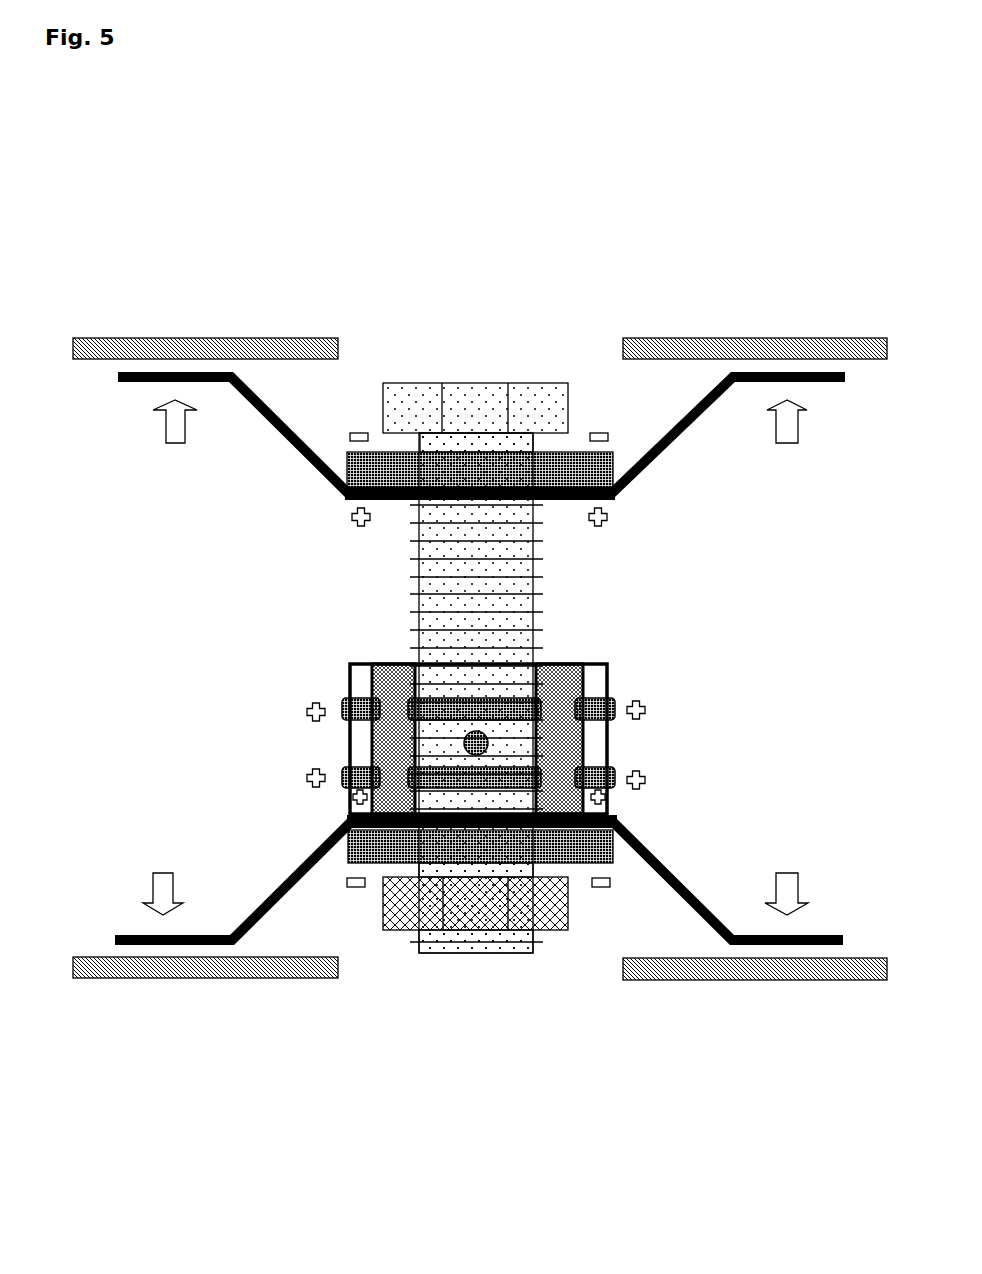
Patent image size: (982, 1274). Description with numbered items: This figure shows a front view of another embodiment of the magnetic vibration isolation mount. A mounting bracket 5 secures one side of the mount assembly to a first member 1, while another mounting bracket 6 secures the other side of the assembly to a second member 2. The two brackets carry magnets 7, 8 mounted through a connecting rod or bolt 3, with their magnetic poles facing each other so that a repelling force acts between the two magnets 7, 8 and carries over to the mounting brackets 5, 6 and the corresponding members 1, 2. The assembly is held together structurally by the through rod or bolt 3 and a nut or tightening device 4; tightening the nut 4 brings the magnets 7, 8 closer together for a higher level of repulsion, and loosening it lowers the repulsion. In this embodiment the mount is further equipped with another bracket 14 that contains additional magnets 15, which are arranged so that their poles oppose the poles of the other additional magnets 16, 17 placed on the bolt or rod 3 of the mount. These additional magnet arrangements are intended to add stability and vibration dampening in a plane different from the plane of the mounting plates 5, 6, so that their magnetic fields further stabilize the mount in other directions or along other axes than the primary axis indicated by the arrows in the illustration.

The first member 1 is at (205, 337).
The second member 2 is at (205, 978).
The connecting rod or bolt 3 is at (475, 383).
The nut or tightening device 4 is at (383, 902).
The mounting bracket 5 is at (672, 438).
The mounting bracket 6 is at (665, 884).
The magnet 7 is at (347, 468).
The magnet 8 is at (348, 845).
The bracket 14 is at (600, 660).
The additional magnets 15 is at (617, 776).
The additional magnet 16 is at (473, 697).
The additional magnet 17 is at (462, 743).